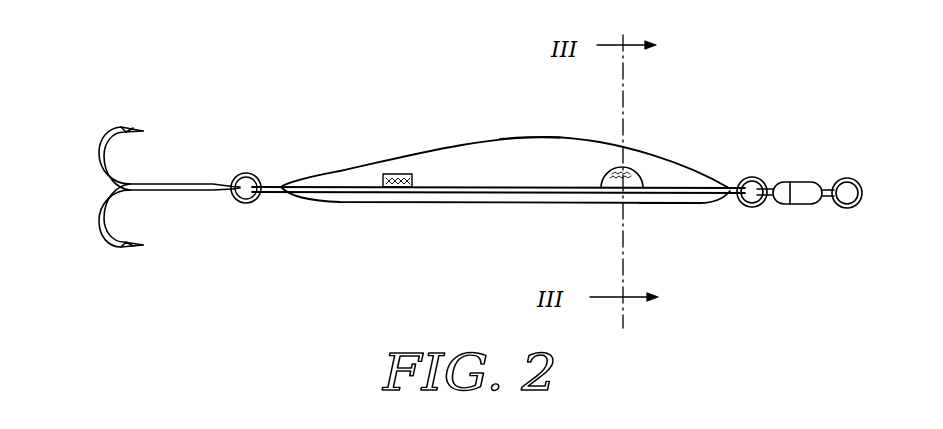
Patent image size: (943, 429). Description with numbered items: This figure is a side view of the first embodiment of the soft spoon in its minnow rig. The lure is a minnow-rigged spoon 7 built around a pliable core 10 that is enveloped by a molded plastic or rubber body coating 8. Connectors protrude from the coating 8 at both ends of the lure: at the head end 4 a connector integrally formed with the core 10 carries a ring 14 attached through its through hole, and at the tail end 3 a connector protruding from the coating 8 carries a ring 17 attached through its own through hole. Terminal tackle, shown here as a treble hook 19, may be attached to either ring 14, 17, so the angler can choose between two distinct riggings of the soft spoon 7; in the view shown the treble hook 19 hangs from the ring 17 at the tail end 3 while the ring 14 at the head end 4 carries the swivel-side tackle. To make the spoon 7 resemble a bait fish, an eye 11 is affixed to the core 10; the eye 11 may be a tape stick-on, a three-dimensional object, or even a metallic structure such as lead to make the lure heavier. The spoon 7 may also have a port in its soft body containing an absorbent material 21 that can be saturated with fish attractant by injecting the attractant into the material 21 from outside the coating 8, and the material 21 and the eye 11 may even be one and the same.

The tail end 3 is at (350, 155).
The head end 4 is at (681, 212).
The minnow-rigged spoon 7 is at (683, 98).
The body coating 8 is at (567, 147).
The pliable core 10 is at (482, 187).
The eye 11 is at (642, 180).
The ring 14 is at (760, 206).
The ring 17 is at (251, 203).
The treble hook 19 is at (107, 128).
The absorbent material 21 is at (398, 187).